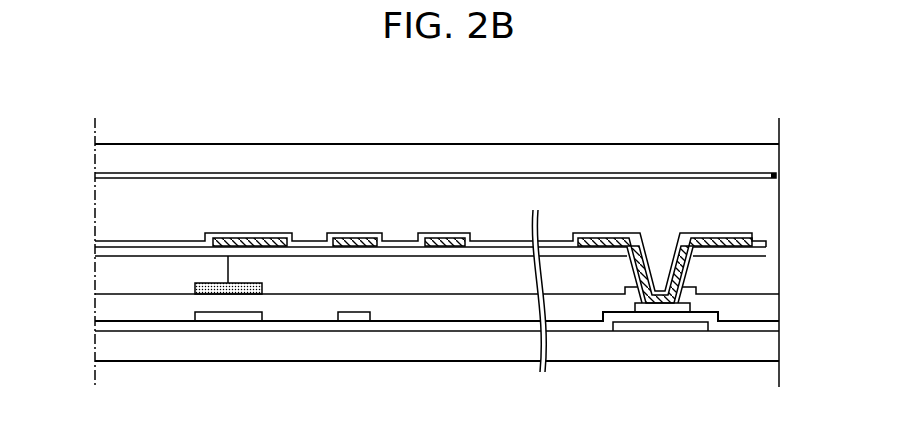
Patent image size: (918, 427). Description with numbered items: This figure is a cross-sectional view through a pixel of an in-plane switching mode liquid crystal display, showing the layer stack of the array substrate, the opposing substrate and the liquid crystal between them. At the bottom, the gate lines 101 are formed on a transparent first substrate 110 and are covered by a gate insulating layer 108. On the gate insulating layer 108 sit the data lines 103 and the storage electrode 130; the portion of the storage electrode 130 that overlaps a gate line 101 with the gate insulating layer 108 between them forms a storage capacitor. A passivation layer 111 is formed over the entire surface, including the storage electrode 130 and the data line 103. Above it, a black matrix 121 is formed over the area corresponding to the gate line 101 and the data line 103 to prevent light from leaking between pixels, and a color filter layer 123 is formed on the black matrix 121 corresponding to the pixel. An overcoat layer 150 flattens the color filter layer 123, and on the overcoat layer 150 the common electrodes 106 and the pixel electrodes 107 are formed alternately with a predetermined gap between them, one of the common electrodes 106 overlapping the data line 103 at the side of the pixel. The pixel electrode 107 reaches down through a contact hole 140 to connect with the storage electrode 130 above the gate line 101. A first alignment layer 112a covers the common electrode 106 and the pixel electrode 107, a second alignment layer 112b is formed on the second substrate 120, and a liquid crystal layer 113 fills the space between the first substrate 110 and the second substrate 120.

The gate line 101 is at (688, 326).
The data line 103 is at (227, 321).
The common electrode 106 is at (250, 238).
The pixel electrode 107 is at (353, 238).
The gate insulating layer 108 is at (767, 328).
The first substrate 110 is at (765, 349).
The passivation layer 111 is at (765, 310).
The first alignment layer 112a is at (494, 240).
The second alignment layer 112b is at (777, 178).
The liquid crystal layer 113 is at (765, 199).
The second substrate 120 is at (765, 154).
The black matrix 121 is at (207, 283).
The color filter layer 123 is at (765, 282).
The storage electrode 130 is at (357, 321).
The contact hole 140 is at (657, 262).
The overcoat layer 150 is at (767, 256).